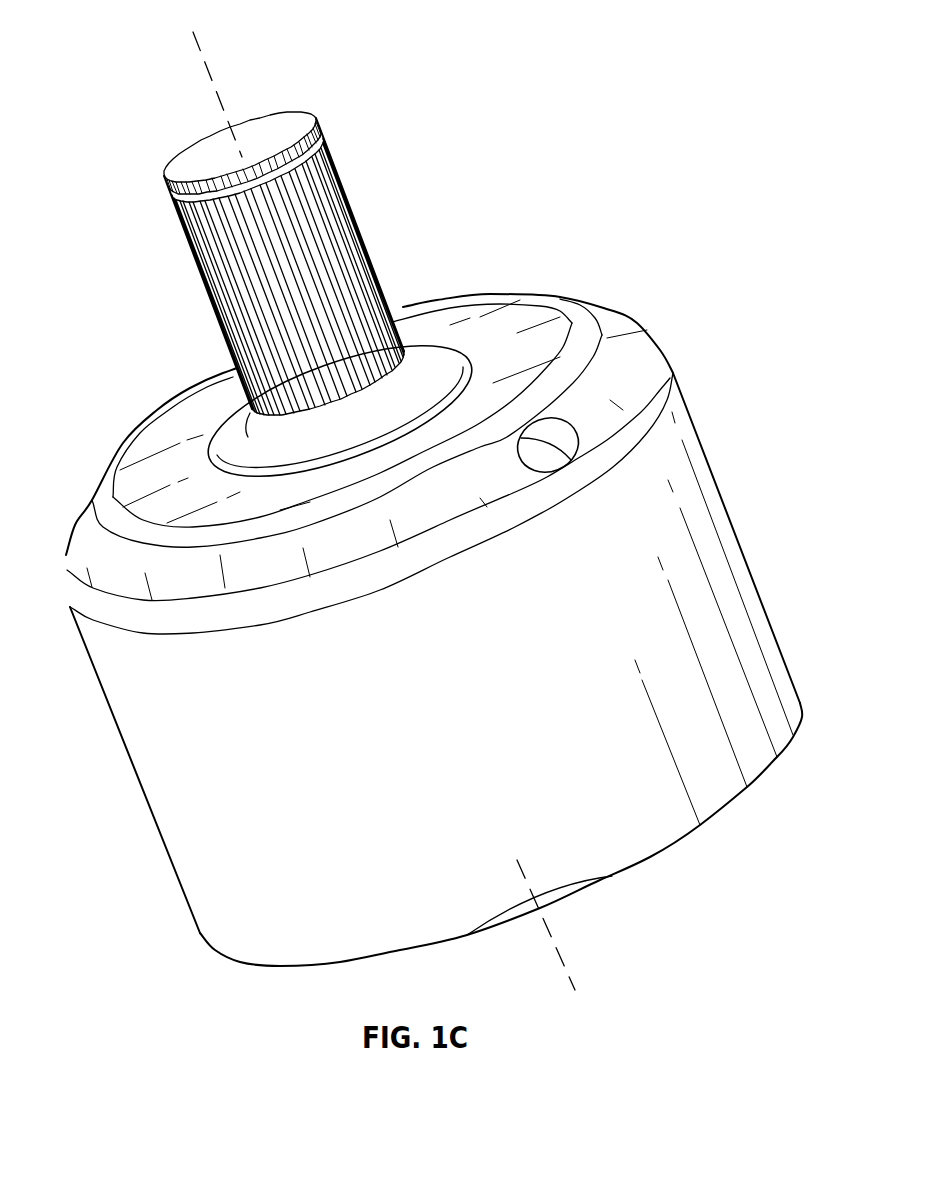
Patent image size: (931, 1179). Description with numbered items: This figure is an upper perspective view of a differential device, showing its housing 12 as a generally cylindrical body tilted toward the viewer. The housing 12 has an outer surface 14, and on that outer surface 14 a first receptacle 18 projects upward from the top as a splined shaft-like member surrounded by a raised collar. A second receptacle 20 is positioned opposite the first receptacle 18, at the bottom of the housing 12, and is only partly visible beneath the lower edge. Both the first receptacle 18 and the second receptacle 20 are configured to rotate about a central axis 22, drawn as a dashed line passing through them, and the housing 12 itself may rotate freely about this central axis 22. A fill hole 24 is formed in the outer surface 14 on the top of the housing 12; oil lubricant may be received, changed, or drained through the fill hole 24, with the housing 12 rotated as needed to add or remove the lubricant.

The housing 12 is at (84, 508).
The outer surface 14 is at (735, 528).
The first receptacle 18 is at (307, 117).
The second receptacle 20 is at (582, 897).
The central axis 22 is at (203, 50).
The fill hole 24 is at (550, 447).